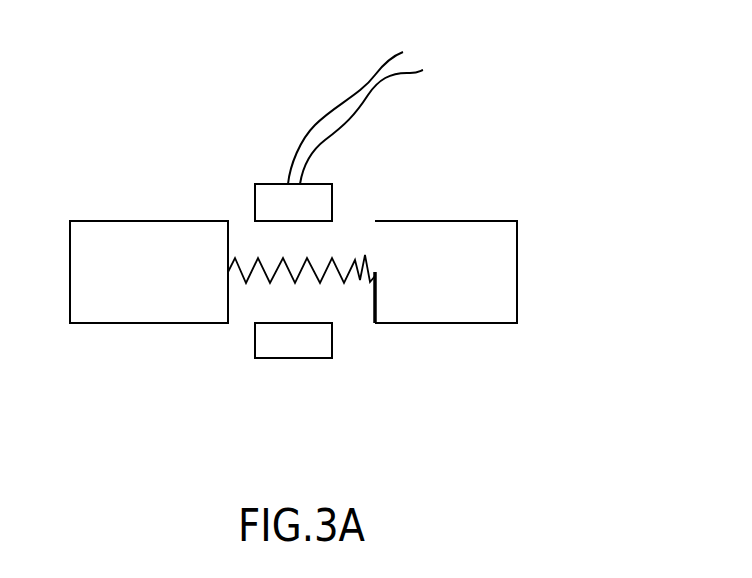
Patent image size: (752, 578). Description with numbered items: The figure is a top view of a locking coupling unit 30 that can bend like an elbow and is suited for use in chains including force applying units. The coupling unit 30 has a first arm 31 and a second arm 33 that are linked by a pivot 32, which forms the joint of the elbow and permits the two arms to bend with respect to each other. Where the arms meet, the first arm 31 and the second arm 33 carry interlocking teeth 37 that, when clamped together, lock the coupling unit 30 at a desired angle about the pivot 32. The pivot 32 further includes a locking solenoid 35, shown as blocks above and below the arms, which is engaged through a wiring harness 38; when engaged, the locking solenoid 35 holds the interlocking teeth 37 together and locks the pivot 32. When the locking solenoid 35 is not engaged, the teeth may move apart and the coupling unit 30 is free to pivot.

The coupling unit 30 is at (580, 170).
The first arm 31 is at (118, 220).
The pivot 32 is at (268, 167).
The second arm 33 is at (443, 221).
The locking solenoid 35 is at (318, 184).
The interlocking teeth 37 is at (365, 258).
The wiring harness 38 is at (353, 100).